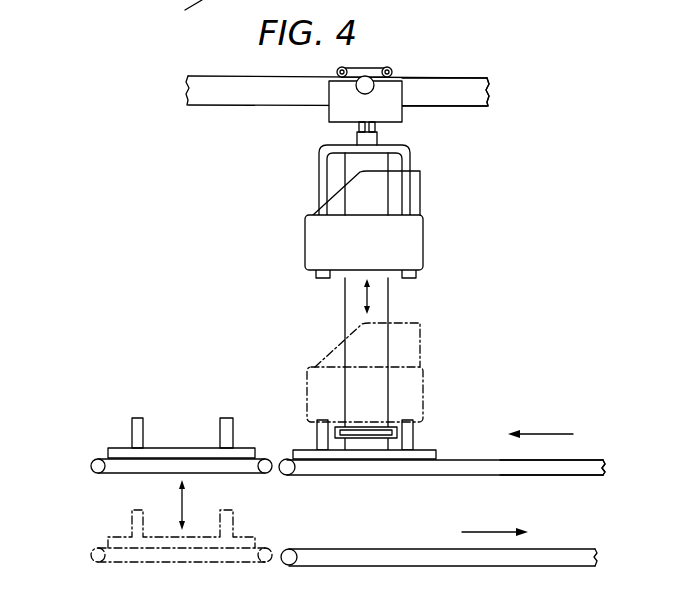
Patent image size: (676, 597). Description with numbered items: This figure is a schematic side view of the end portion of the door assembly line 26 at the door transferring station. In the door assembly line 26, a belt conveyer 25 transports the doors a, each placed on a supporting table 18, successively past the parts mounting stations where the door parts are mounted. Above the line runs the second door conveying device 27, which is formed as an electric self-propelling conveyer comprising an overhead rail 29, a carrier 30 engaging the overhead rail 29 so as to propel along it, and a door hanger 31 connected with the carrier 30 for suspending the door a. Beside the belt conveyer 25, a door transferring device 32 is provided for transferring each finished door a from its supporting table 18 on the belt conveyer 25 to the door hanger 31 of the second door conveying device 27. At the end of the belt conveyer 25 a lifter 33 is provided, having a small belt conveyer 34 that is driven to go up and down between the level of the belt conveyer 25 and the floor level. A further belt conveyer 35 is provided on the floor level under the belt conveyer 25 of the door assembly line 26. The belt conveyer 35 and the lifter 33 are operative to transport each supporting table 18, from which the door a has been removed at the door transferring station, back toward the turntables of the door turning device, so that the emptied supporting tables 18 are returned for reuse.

The second door conveying device 27 is at (426, 72).
The overhead rail 29 is at (467, 107).
The carrier 30 is at (333, 110).
The door hanger 31 is at (411, 160).
The door a is at (305, 243).
The door transferring device 32 is at (398, 297).
The supporting table 18 is at (425, 447).
The belt conveyer 25 is at (472, 459).
The door assembly line 26 is at (591, 453).
The lifter 33 is at (79, 466).
The small belt conveyer 34 is at (115, 474).
The belt conveyer 35 is at (573, 549).